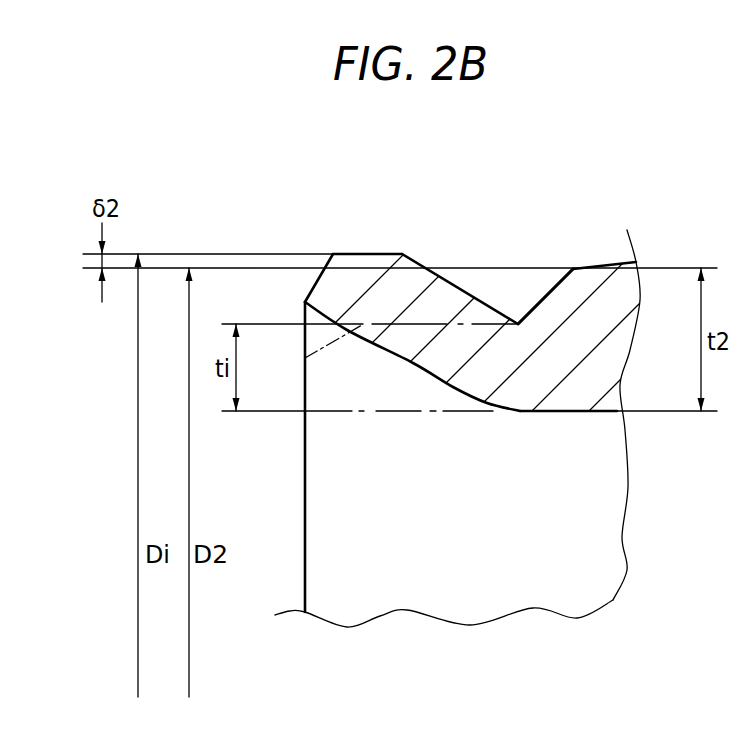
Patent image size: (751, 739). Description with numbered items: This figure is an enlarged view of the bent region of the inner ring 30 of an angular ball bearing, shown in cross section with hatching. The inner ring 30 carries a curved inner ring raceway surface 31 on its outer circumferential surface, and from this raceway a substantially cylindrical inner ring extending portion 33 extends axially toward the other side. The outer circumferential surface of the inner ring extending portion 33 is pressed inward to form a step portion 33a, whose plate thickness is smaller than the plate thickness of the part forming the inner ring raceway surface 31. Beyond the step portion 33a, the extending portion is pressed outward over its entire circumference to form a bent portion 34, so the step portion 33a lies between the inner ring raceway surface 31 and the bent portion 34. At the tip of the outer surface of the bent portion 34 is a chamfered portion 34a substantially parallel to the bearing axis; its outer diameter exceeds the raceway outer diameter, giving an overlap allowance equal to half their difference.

The inner ring 30 is at (562, 425).
The inner ring raceway surface 31 is at (597, 267).
The inner ring extending portion 33 is at (458, 358).
The step portion 33a is at (543, 293).
The bent portion 34 is at (337, 282).
The chamfered portion 34a is at (370, 253).